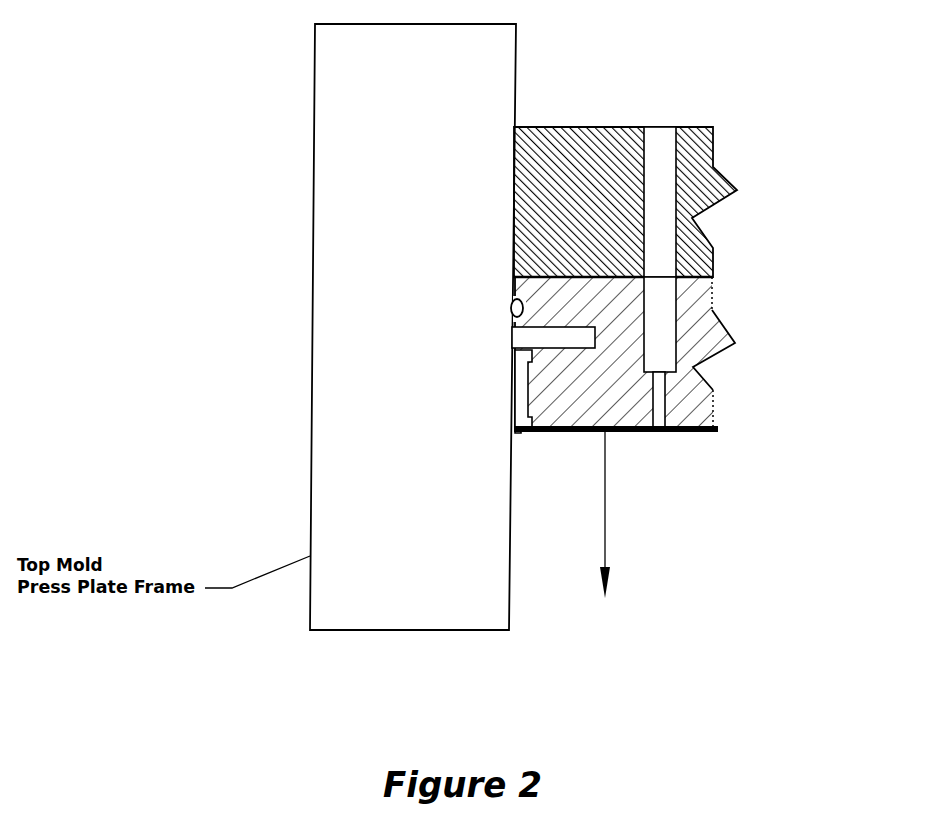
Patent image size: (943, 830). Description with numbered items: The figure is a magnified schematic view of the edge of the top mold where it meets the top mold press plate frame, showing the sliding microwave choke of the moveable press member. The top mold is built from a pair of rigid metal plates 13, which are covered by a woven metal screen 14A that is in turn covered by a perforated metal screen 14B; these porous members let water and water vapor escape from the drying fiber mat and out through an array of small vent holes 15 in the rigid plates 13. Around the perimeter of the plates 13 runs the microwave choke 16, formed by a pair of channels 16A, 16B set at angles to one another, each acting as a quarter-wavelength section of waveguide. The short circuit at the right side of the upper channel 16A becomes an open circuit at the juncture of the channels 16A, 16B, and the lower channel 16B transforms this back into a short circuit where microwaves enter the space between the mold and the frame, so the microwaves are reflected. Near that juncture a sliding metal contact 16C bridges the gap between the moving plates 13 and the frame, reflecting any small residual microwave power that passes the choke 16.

The rigid metal plates 13 is at (753, 352).
The woven metal screen 14A is at (692, 413).
The perforated metal screen 14B is at (687, 476).
The vent holes 15 is at (664, 125).
The microwave choke 16 is at (428, 347).
The upper channel 16A is at (509, 335).
The lower channel 16B is at (518, 393).
The sliding metal contact 16C is at (468, 291).